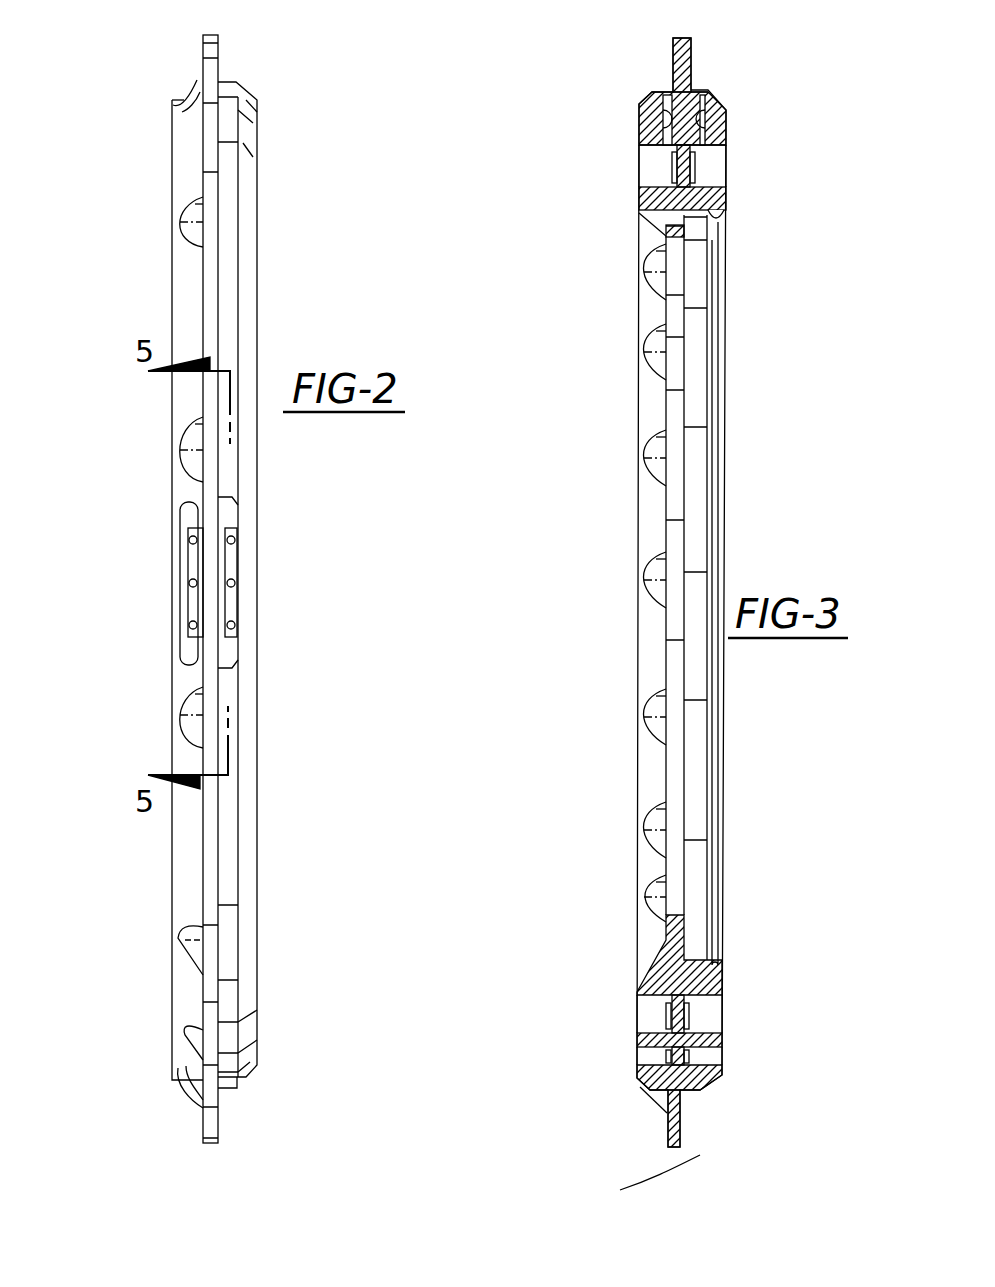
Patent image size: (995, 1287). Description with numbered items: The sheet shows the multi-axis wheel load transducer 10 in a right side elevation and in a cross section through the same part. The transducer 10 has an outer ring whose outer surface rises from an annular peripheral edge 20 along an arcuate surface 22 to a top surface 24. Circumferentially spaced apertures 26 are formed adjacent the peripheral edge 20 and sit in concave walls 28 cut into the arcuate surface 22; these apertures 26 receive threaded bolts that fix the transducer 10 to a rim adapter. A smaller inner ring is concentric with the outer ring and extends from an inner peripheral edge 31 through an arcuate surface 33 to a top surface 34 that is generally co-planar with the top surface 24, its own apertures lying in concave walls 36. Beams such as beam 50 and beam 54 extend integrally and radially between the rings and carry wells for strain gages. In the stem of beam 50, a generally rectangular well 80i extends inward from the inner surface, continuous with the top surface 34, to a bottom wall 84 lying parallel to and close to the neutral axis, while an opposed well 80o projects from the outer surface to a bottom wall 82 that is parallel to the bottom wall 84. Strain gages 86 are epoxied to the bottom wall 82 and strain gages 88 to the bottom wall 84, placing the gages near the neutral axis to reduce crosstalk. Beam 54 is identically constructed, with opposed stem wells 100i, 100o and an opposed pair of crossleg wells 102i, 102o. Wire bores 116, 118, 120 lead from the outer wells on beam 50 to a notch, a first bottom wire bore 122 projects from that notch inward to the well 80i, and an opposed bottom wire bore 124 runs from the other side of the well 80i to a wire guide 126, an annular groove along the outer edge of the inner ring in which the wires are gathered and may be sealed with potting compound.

In FIG. 2, the multi-axis wheel load transducer 10 is at (304, 186).
In FIG. 3, the multi-axis wheel load transducer 10 is at (524, 314).
In FIG. 2, the annular peripheral edge 20 is at (218, 1118).
In FIG. 2, the arcuate surface 22 is at (196, 96).
In FIG. 3, the arcuate surface 22 is at (668, 1108).
In FIG. 2, the top surface 24 is at (172, 858).
In FIG. 3, the apertures 26 is at (680, 1122).
In FIG. 2, the concave walls 28 is at (182, 937).
In FIG. 3, the concave walls 28 is at (640, 1088).
In FIG. 3, the inner peripheral edge 31 is at (672, 757).
In FIG. 3, the arcuate surface 33 is at (655, 955).
In FIG. 3, the top surface 34 is at (637, 873).
In FIG. 3, the concave walls 36 is at (648, 367).
In FIG. 3, the beam 50 is at (687, 136).
In FIG. 3, the beam 54 is at (674, 1003).
In FIG. 3, the well 80o is at (626, 156).
In FIG. 3, the well 80i is at (744, 156).
In FIG. 3, the bottom wall 82 is at (670, 155).
In FIG. 3, the bottom wall 84 is at (697, 163).
In FIG. 3, the strain gages 86 is at (670, 190).
In FIG. 3, the strain gages 88 is at (693, 162).
In FIG. 3, the stem well 100o is at (655, 1005).
In FIG. 3, the stem well 100i is at (713, 1007).
In FIG. 3, the crossleg well 102o is at (650, 1056).
In FIG. 3, the crossleg well 102i is at (713, 1057).
In FIG. 2, the wire bore 116 is at (189, 540).
In FIG. 3, the wire bore 116 is at (668, 116).
In FIG. 2, the wire bore 118 is at (189, 583).
In FIG. 2, the wire bore 120 is at (189, 625).
In FIG. 3, the first bottom wire bore 122 is at (708, 108).
In FIG. 3, the opposed bottom wire bore 124 is at (716, 200).
In FIG. 3, the wire guide 126 is at (722, 218).